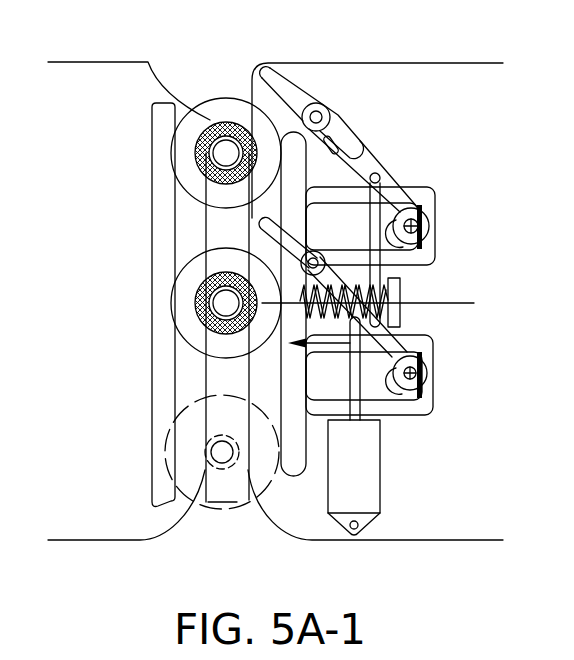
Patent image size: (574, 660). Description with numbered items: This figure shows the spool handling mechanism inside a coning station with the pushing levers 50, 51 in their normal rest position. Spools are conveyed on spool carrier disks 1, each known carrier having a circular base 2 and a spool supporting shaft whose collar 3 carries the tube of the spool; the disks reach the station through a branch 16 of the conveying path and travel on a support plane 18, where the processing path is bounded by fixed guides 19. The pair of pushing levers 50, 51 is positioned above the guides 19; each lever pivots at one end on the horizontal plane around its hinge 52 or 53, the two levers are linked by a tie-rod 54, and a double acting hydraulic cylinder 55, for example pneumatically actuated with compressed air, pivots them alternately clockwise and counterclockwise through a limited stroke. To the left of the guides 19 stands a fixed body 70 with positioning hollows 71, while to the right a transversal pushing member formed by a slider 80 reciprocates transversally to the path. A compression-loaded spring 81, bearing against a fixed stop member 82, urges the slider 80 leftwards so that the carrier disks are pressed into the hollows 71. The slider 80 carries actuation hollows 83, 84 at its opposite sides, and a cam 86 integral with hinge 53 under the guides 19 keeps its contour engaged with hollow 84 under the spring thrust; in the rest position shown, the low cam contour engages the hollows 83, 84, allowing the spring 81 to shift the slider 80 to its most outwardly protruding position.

The spool carrier disk 1 is at (199, 66).
The circular base 2 is at (211, 502).
The collar 3 is at (228, 468).
The branch 16 is at (152, 83).
The support plane 18 is at (224, 238).
The fixed guides 19 is at (243, 383).
The pushing lever 50 is at (277, 76).
The pushing lever 51 is at (262, 229).
The hinge 52 is at (413, 223).
The hinge 53 is at (427, 381).
The tie-rod 54 is at (326, 268).
The double acting hydraulic cylinder 55 is at (374, 503).
The fixed body 70 is at (151, 437).
The positioning hollows 71 is at (171, 153).
The slider 80 is at (290, 477).
The spring 81 is at (381, 301).
The fixed stop member 82 is at (401, 323).
The actuation hollow 83 is at (436, 190).
The actuation hollow 84 is at (424, 405).
The cam 86 is at (400, 277).